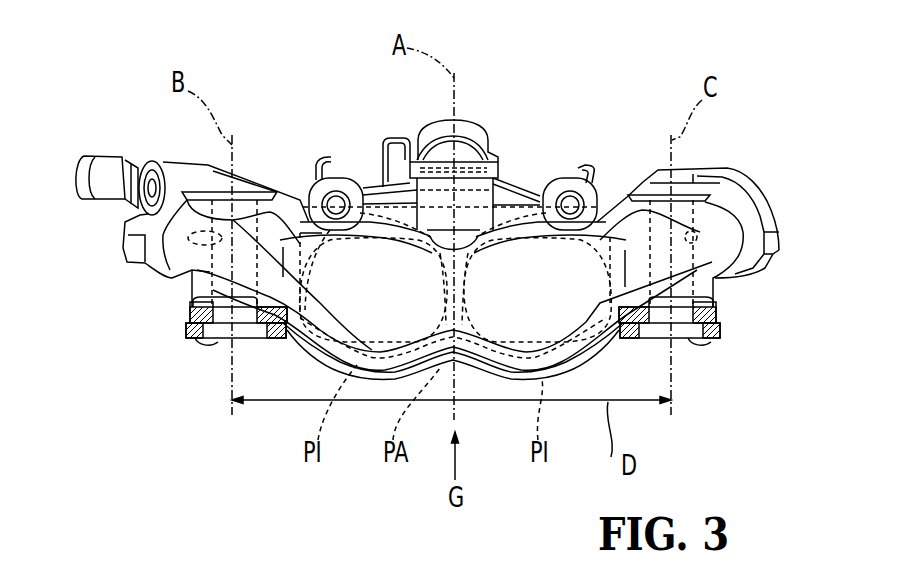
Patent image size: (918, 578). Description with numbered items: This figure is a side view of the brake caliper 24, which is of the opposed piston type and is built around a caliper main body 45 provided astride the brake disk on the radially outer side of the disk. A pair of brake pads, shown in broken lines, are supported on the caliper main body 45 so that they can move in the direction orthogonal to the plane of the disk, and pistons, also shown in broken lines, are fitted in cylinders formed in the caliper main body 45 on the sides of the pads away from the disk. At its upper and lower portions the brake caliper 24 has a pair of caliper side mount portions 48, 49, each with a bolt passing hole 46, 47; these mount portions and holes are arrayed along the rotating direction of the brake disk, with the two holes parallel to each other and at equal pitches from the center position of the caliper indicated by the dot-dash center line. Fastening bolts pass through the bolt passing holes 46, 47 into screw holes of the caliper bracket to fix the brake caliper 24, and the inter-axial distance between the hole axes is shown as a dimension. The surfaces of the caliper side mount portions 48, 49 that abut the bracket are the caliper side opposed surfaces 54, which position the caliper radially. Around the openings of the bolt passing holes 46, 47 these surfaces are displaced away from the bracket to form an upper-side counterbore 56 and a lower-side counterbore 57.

The brake caliper 24 is at (517, 103).
The caliper main body 45 is at (512, 179).
The bolt passing hole 46 is at (188, 239).
The bolt passing hole 47 is at (695, 237).
The caliper side mount portion 48 is at (190, 299).
The caliper side mount portion 49 is at (715, 293).
The caliper side opposed surface 54 is at (197, 342).
The upper-side counterbore 56 is at (215, 342).
The lower-side counterbore 57 is at (690, 345).